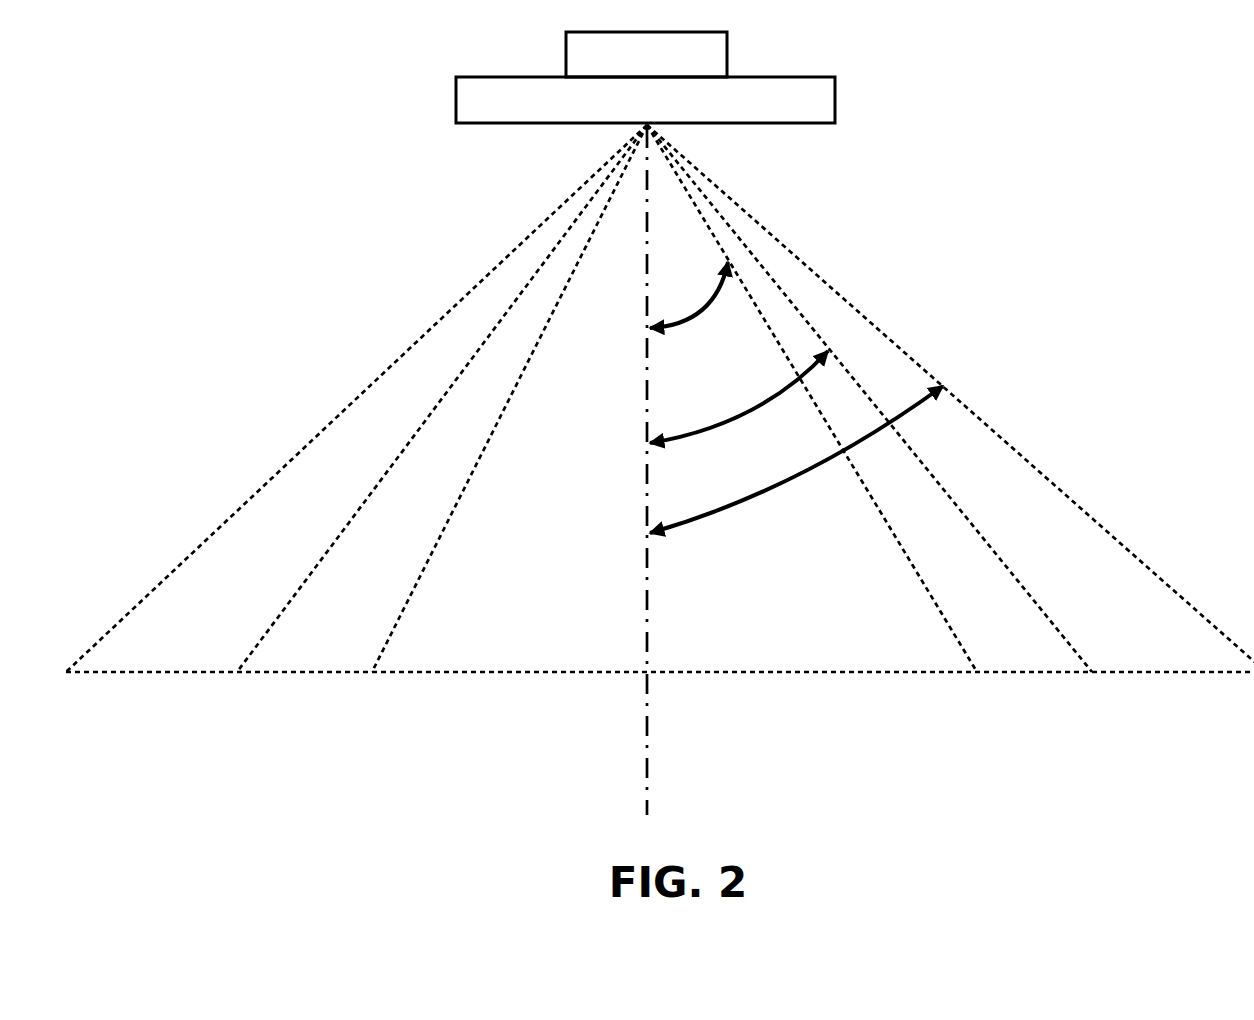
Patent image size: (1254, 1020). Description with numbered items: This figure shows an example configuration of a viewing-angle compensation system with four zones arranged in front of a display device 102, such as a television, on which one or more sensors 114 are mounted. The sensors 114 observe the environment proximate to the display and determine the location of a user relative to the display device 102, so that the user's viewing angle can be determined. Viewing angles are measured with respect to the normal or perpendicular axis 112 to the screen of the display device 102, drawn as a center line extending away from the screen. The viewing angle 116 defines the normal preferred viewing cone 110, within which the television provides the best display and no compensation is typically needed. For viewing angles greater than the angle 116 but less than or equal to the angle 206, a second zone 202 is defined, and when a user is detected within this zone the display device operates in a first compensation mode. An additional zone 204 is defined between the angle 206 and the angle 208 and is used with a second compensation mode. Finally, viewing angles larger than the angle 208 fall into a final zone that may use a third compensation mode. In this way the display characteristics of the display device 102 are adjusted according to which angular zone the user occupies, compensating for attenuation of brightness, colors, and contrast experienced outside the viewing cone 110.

The display device 102 is at (473, 75).
The sensors 114 is at (729, 50).
The viewing angle 116 is at (692, 305).
The angle 206 is at (692, 425).
The angle 208 is at (707, 507).
The additional zone 204 is at (160, 580).
The zone 202 is at (266, 629).
The viewing cone 110 is at (412, 580).
The perpendicular axis 112 is at (648, 762).